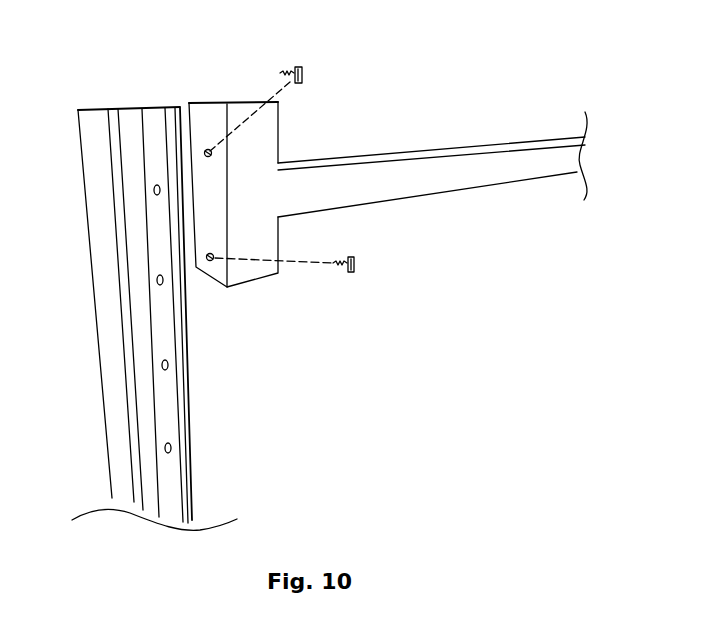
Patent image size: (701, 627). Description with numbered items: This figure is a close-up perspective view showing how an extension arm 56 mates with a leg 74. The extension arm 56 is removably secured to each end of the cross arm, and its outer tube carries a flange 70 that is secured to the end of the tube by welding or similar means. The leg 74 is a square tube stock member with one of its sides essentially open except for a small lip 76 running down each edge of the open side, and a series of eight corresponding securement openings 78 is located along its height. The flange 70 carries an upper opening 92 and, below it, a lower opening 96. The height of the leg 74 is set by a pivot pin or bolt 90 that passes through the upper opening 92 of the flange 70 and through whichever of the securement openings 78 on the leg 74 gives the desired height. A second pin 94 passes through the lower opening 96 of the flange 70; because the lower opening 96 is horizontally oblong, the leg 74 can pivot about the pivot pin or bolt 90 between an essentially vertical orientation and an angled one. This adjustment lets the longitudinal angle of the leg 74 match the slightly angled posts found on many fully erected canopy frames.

The extension arm 56 is at (450, 181).
The flange 70 is at (263, 128).
The leg 74 is at (185, 400).
The lip 76 is at (118, 113).
The securement openings 78 is at (170, 360).
The pivot pin or bolt 90 is at (306, 70).
The upper opening 92 is at (213, 153).
The second pin 94 is at (360, 262).
The lower opening 96 is at (217, 258).